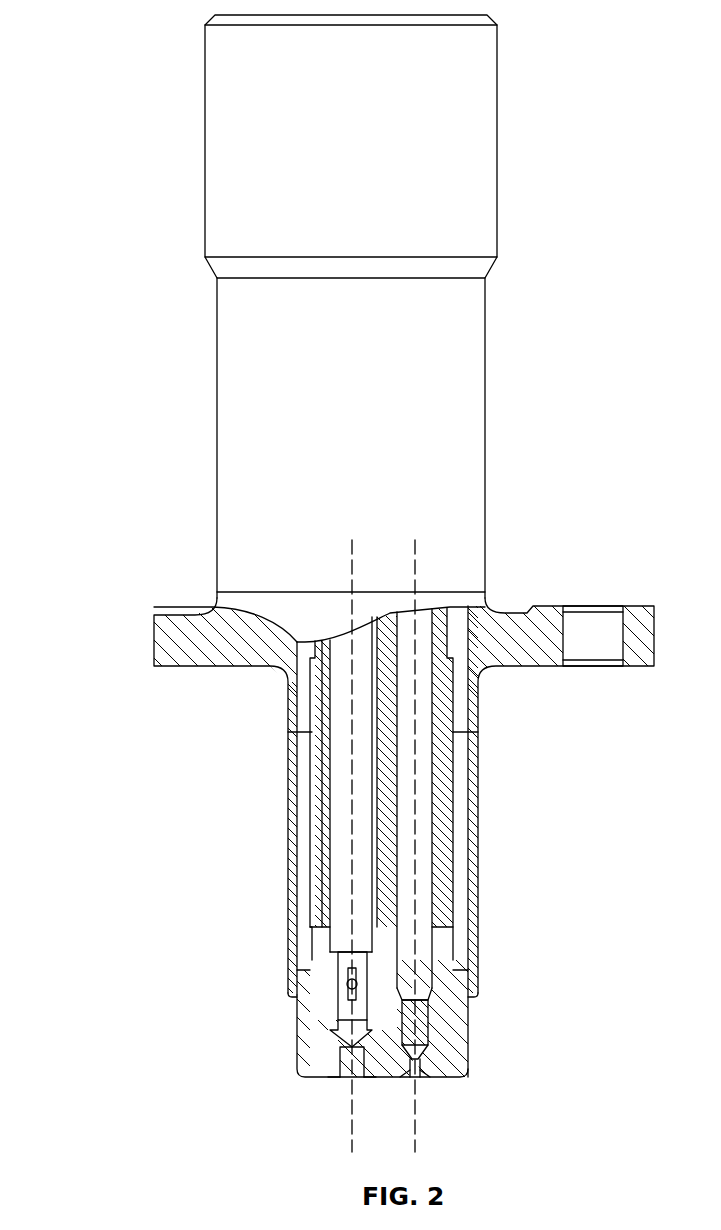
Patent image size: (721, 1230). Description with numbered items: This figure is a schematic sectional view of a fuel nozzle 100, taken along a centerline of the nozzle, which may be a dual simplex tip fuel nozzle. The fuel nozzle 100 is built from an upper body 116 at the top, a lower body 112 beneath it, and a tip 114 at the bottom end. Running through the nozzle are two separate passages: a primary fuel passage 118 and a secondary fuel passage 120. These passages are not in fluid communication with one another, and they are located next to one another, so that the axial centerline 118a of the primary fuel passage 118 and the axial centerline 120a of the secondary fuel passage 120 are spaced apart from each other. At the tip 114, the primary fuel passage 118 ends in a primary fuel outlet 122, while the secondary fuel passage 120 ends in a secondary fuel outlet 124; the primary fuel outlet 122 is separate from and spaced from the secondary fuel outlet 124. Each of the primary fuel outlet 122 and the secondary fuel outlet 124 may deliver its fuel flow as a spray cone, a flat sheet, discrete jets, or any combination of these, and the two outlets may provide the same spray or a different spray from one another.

The fuel nozzle 100 is at (340, 589).
The lower body 112 is at (487, 853).
The tip 114 is at (476, 1040).
The upper body 116 is at (530, 508).
The primary fuel passage 118 is at (463, 1012).
The axial centerline of the primary fuel passage 118a is at (415, 1127).
The secondary fuel passage 120 is at (322, 1040).
The axial centerline of the secondary fuel passage 120a is at (352, 1127).
The primary fuel outlet 122 is at (416, 1078).
The secondary fuel outlet 124 is at (345, 1076).